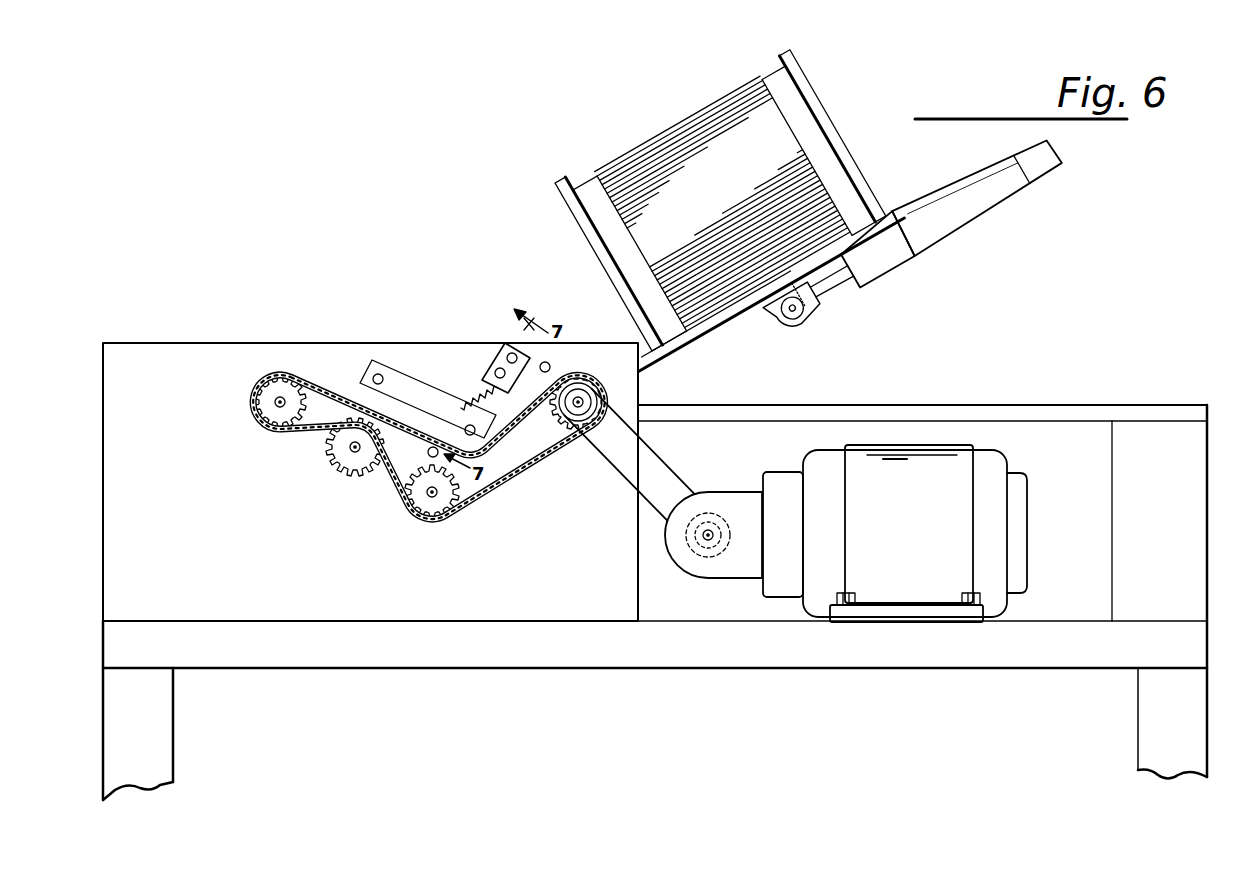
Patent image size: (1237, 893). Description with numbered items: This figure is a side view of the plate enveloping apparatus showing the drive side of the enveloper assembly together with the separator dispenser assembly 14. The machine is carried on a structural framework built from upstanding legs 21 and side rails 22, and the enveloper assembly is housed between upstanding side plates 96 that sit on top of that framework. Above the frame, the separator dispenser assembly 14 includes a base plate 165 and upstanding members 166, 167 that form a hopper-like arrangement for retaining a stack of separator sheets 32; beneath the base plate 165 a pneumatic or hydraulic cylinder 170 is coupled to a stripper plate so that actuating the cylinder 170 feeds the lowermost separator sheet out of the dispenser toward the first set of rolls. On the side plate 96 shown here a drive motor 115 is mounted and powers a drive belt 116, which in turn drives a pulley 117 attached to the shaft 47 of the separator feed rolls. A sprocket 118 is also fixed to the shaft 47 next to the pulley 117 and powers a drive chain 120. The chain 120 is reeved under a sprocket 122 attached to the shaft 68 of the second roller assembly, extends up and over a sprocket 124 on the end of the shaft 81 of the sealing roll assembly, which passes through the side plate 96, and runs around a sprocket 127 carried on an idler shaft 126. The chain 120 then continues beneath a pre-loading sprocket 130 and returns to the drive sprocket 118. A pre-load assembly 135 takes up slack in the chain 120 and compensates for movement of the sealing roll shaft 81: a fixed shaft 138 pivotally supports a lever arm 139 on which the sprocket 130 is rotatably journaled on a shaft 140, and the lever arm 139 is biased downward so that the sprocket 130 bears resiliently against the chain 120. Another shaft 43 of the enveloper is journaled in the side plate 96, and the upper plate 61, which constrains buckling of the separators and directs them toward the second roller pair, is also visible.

The separator dispenser assembly 14 is at (784, 233).
The separator sheets 32 is at (673, 140).
The upstanding member 166 is at (565, 202).
The upstanding member 167 is at (812, 96).
The base plate 165 is at (710, 330).
The cylinder 170 is at (968, 210).
The side plate 96 is at (160, 358).
The side rails 22 is at (715, 656).
The upstanding legs 21 is at (160, 723).
The lever arm 139 is at (400, 380).
The fixed shaft 138 is at (374, 378).
The shaft 140 is at (465, 428).
The pre-load assembly 135 is at (478, 368).
The pre-loading sprocket 130 is at (470, 400).
The shaft 43 is at (550, 366).
The idler shaft 126 is at (274, 400).
The sprocket 127 is at (268, 410).
The sprocket 124 is at (330, 452).
The shaft 81 is at (352, 462).
The shaft 68 is at (433, 500).
The sprocket 122 is at (414, 516).
The upper plate 61 is at (428, 457).
The sprocket 118 is at (553, 411).
The drive chain 120 is at (494, 496).
The shaft 47 is at (581, 399).
The pulley 117 is at (588, 412).
The drive belt 116 is at (612, 463).
The drive motor 115 is at (998, 473).